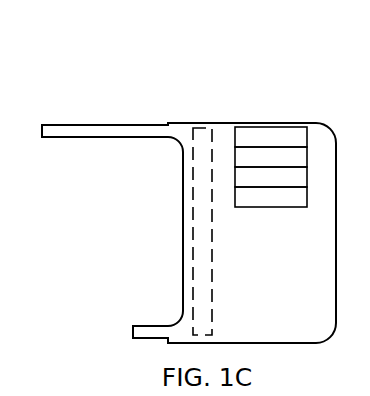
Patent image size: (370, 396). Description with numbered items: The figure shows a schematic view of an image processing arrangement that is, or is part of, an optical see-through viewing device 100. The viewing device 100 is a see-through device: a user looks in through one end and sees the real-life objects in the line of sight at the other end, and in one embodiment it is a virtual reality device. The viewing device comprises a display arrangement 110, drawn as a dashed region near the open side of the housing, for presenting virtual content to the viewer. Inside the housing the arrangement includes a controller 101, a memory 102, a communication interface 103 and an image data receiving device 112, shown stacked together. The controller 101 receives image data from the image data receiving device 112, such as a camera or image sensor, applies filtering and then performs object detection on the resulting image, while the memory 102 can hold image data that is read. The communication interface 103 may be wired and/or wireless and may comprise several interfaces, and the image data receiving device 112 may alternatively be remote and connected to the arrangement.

The viewing device 100 is at (135, 88).
The display arrangement 110 is at (192, 130).
The controller 101 is at (271, 137).
The memory 102 is at (271, 157).
The communication interface 103 is at (271, 177).
The image data receiving device 112 is at (271, 197).